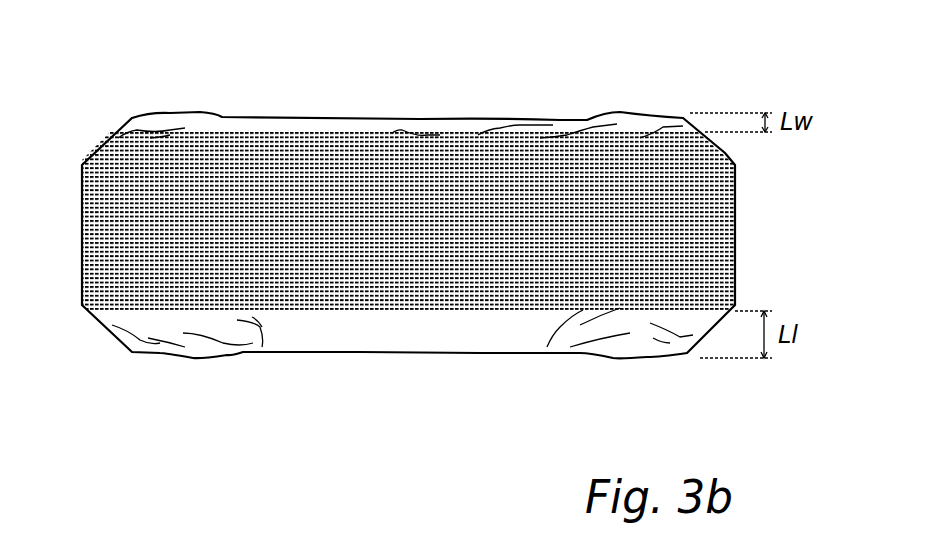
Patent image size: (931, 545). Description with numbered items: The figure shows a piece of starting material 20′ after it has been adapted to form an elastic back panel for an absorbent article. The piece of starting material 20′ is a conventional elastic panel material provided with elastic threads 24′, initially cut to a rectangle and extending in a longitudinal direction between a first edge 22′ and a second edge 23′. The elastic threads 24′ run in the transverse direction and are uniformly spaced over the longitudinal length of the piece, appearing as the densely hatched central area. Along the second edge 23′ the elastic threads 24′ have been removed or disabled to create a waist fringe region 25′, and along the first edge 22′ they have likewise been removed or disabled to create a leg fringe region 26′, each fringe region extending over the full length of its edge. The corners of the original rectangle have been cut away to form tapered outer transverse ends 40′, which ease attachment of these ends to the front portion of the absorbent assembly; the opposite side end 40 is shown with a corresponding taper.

The piece of starting material 20′ is at (724, 98).
The first edge 22′ is at (408, 354).
The second edge 23′ is at (433, 124).
The elastic threads 24′ is at (205, 133).
The waist fringe region 25′ is at (565, 130).
The leg fringe region 26′ is at (537, 337).
The side edge 40 is at (106, 212).
The tapered outer transverse ends 40′ is at (702, 228).